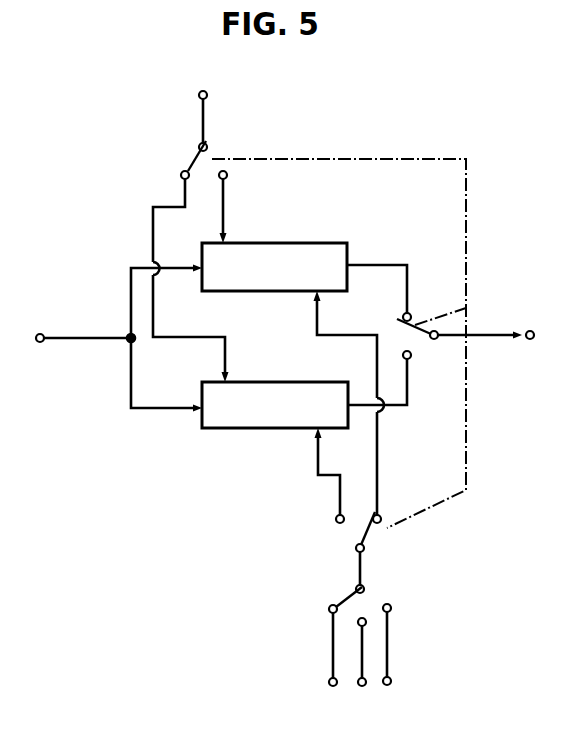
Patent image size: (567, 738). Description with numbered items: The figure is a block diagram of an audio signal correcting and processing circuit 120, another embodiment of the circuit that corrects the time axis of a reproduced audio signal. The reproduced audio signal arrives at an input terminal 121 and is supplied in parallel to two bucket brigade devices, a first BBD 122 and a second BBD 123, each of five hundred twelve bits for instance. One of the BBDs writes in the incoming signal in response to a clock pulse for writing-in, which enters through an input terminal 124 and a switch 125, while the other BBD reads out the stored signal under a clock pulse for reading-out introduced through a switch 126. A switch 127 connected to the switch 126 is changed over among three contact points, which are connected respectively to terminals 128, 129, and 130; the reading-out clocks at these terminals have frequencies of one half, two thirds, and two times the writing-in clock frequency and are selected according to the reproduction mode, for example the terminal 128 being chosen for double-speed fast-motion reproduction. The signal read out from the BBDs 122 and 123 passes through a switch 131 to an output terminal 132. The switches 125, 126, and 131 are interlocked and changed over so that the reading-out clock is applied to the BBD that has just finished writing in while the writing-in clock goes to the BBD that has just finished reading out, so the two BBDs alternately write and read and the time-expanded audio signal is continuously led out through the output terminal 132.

The audio signal correcting and processing circuit 120 is at (409, 118).
The input terminal 121 is at (38, 332).
The bucket brigade device 122 is at (275, 242).
The bucket brigade device 123 is at (251, 430).
The input terminal 124 is at (200, 90).
The switch 125 is at (190, 159).
The switch 126 is at (363, 531).
The switch 127 is at (342, 598).
The terminal 128 is at (331, 688).
The terminal 129 is at (362, 687).
The terminal 130 is at (390, 687).
The switch 131 is at (417, 336).
The output terminal 132 is at (530, 328).